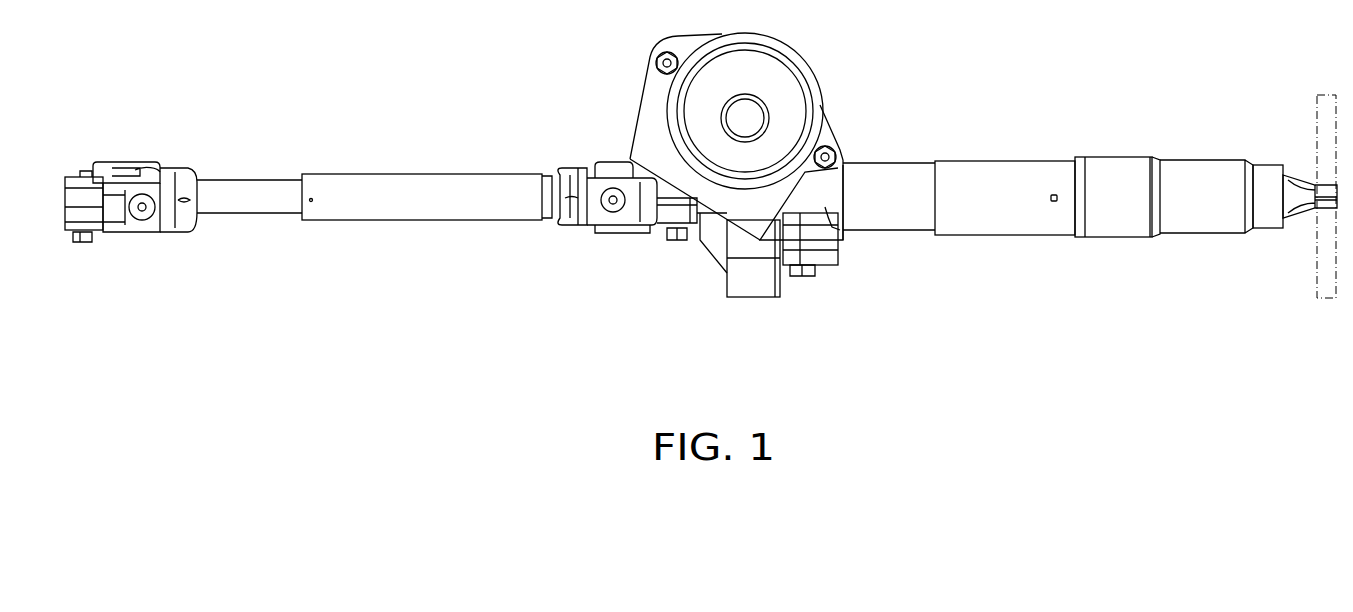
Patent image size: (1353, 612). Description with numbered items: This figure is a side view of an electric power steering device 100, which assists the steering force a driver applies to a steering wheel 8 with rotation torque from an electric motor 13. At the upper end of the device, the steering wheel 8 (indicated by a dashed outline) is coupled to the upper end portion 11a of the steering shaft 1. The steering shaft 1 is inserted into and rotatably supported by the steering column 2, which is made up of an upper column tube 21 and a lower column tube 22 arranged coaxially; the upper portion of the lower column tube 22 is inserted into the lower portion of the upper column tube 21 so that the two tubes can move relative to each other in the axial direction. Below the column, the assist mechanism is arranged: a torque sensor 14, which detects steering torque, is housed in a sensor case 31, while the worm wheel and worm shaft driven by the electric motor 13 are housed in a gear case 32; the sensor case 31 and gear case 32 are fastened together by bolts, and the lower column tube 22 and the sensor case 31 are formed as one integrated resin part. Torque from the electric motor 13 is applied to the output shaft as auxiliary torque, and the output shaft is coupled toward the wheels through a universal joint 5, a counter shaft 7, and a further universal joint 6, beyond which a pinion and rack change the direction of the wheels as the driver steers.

The electric power steering device 100 is at (1228, 120).
The steering shaft 1 is at (1302, 172).
The upper end portion 11a is at (1327, 203).
The steering wheel 8 is at (1327, 300).
The steering column 2 is at (1135, 247).
The upper column tube 21 is at (1042, 220).
The lower column tube 22 is at (862, 220).
The electric motor 13 is at (773, 78).
The torque sensor 14 is at (800, 285).
The sensor case 31 is at (825, 210).
The gear case 32 is at (755, 285).
The universal joint 5 is at (590, 208).
The universal joint 6 is at (162, 213).
The counter shaft 7 is at (397, 200).